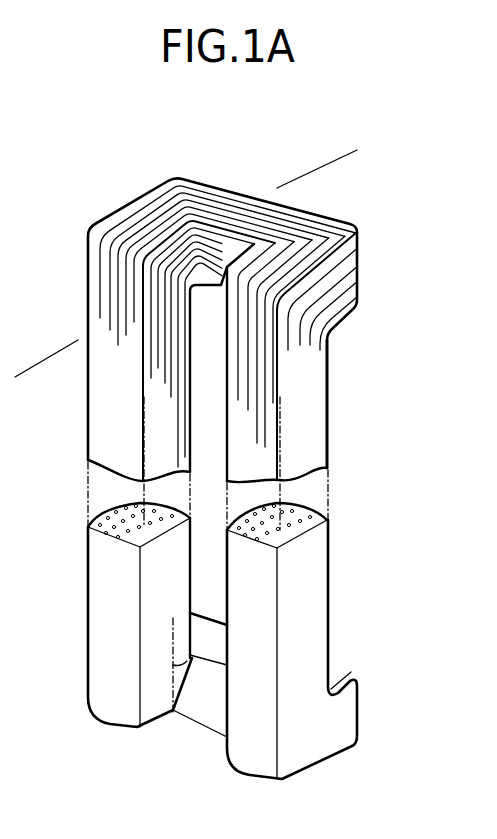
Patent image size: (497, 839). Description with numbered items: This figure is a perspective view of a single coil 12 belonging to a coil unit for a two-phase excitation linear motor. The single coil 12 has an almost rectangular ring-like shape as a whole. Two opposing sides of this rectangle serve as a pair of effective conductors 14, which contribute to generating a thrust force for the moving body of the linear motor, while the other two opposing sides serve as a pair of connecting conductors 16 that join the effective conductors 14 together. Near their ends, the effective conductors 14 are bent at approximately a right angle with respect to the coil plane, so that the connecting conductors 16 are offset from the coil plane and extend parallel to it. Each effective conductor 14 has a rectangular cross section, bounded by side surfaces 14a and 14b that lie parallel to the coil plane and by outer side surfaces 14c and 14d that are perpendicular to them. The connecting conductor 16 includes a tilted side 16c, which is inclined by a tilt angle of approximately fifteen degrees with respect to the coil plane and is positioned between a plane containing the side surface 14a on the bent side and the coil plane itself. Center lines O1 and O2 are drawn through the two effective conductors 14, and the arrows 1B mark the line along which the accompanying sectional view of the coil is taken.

The single coil 12 is at (226, 456).
The effective conductors 14 is at (218, 641).
The side surface 14a is at (328, 413).
The side surface 14b is at (246, 419).
The outer side surface 14c is at (306, 551).
The outer side surface 14d is at (248, 560).
The connecting conductors 16 is at (250, 478).
The tilted side 16c is at (218, 258).
The center axis of left leg O1 is at (143, 488).
The center axis of right leg O2 is at (281, 467).
The arrows 1B is at (333, 163).